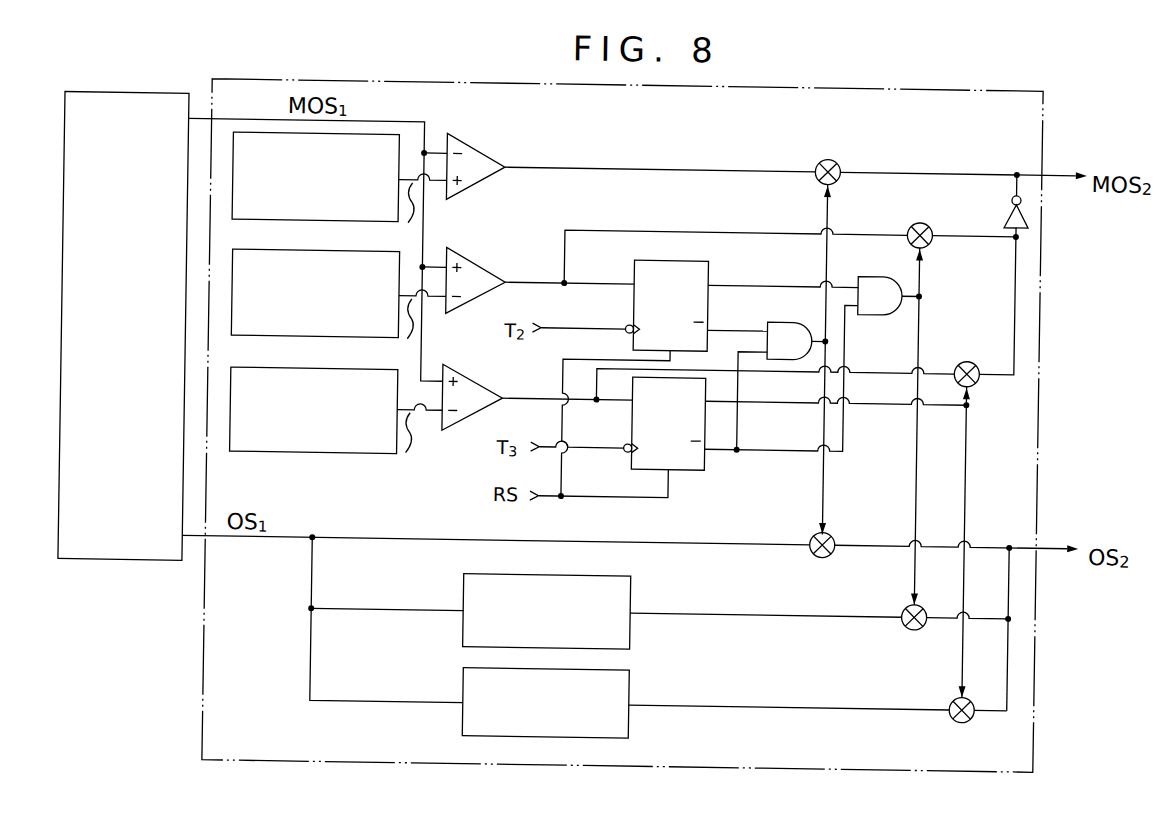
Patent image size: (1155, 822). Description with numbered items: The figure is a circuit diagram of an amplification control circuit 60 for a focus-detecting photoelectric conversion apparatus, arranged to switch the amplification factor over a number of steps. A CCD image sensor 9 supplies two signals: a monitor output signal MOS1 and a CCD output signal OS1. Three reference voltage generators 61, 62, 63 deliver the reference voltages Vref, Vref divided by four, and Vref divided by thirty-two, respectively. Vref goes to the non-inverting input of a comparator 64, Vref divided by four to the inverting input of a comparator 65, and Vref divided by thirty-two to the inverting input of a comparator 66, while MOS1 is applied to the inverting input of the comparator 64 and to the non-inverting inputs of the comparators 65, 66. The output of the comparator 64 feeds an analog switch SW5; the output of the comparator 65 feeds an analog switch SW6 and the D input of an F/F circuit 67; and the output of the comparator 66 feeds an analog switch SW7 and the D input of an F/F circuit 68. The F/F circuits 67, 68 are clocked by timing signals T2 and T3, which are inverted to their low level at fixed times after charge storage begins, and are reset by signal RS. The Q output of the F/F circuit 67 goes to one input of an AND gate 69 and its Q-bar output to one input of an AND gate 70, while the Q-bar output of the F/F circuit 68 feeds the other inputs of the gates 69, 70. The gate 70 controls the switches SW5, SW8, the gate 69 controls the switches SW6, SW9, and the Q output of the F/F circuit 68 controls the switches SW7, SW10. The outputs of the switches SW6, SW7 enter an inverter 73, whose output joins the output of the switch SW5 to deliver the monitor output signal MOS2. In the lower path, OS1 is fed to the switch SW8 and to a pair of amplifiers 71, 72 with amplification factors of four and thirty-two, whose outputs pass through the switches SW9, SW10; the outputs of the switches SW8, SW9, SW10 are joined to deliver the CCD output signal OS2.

The CCD image sensor 9 is at (160, 100).
The amplification control circuit 60 is at (966, 86).
The reference voltage generator 61 is at (265, 225).
The reference voltage generator 62 is at (268, 341).
The reference voltage generator 63 is at (270, 458).
The comparator 64 is at (485, 160).
The comparator 65 is at (485, 272).
The comparator 66 is at (485, 388).
The F/F circuit 67 is at (671, 262).
The F/F circuit 68 is at (691, 469).
The AND gate 69 is at (878, 273).
The AND gate 70 is at (767, 322).
The amplifier 71 is at (612, 576).
The amplifier 72 is at (633, 676).
The inverter 73 is at (1003, 215).
The analog switch SW5 is at (821, 158).
The analog switch SW6 is at (917, 219).
The analog switch SW7 is at (966, 357).
The analog switch SW8 is at (833, 536).
The analog switch SW9 is at (906, 607).
The analog switch SW10 is at (956, 700).